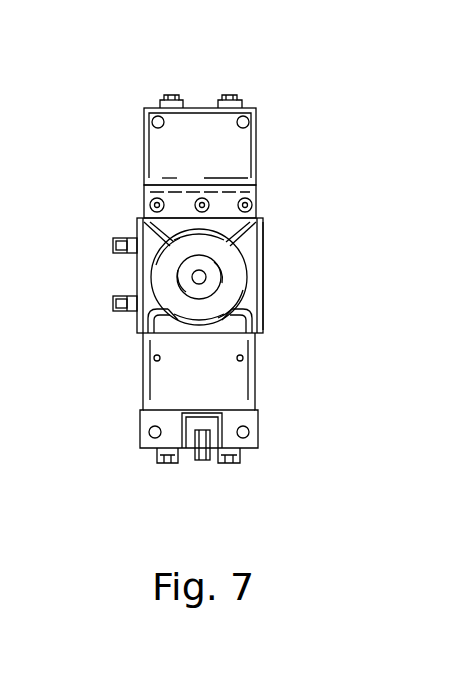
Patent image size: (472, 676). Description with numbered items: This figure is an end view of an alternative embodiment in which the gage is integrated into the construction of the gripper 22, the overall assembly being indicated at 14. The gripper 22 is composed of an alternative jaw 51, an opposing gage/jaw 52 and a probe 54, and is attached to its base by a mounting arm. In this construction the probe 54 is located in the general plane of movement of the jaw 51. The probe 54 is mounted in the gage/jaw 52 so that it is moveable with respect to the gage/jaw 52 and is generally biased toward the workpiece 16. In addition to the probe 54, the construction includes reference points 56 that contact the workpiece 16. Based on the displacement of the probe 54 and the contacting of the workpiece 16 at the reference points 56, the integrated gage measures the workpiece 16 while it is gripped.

The lock assembly 14 is at (192, 271).
The workpiece 16 is at (250, 246).
The gripper 22 is at (280, 287).
The jaw 51 is at (137, 236).
The gage/jaw 52 is at (256, 380).
The probe 54 is at (191, 456).
The reference points 56 is at (150, 216).